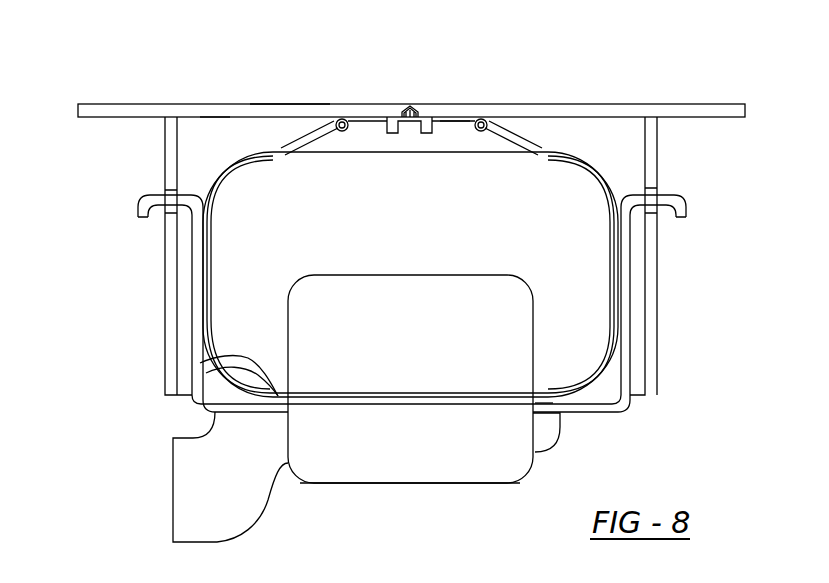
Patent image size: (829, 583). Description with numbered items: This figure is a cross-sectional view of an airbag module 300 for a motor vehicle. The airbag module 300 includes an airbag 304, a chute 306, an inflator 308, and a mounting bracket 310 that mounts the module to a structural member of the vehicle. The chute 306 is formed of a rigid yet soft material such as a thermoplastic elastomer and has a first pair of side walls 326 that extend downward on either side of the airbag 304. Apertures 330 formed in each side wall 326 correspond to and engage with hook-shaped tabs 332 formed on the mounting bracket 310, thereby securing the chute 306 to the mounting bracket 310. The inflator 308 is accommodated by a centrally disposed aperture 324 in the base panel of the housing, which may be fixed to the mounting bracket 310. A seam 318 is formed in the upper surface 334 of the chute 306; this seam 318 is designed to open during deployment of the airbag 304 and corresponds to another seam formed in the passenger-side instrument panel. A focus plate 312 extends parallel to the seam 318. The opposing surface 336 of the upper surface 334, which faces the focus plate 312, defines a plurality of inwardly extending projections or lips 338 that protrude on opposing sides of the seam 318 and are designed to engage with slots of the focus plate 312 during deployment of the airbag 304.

The airbag module 300 is at (443, 491).
The airbag 304 is at (428, 230).
The chute 306 is at (690, 100).
The inflator 308 is at (432, 345).
The mounting bracket 310 is at (234, 488).
The focus plate 312 is at (453, 128).
The seam 318 is at (413, 105).
The aperture 324 is at (200, 363).
The first pair of side walls 326 is at (166, 298).
The apertures 330 is at (169, 190).
The hook-shaped tabs 332 is at (143, 217).
The upper surface 334 is at (249, 103).
The opposing surface 336 is at (226, 116).
The lips 338 is at (392, 134).